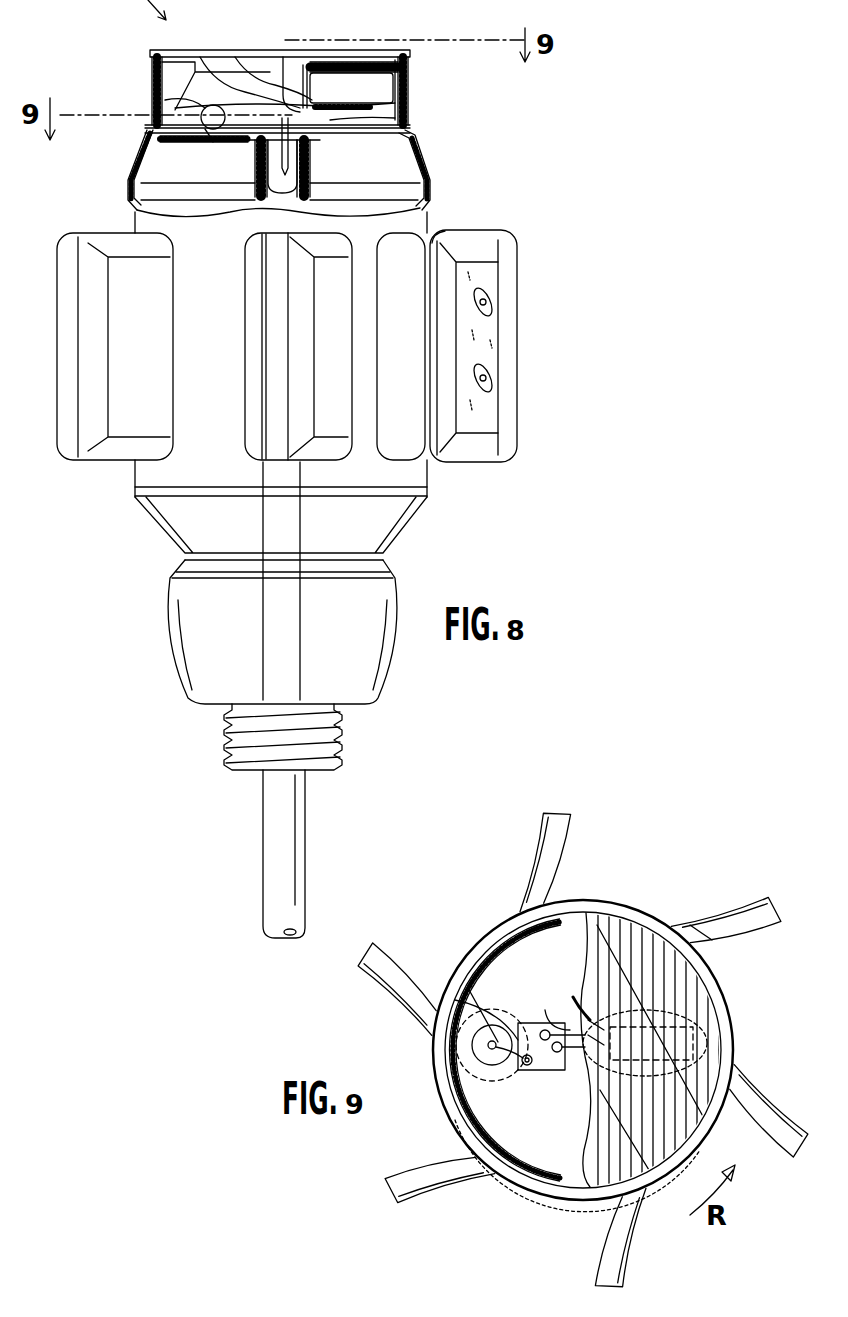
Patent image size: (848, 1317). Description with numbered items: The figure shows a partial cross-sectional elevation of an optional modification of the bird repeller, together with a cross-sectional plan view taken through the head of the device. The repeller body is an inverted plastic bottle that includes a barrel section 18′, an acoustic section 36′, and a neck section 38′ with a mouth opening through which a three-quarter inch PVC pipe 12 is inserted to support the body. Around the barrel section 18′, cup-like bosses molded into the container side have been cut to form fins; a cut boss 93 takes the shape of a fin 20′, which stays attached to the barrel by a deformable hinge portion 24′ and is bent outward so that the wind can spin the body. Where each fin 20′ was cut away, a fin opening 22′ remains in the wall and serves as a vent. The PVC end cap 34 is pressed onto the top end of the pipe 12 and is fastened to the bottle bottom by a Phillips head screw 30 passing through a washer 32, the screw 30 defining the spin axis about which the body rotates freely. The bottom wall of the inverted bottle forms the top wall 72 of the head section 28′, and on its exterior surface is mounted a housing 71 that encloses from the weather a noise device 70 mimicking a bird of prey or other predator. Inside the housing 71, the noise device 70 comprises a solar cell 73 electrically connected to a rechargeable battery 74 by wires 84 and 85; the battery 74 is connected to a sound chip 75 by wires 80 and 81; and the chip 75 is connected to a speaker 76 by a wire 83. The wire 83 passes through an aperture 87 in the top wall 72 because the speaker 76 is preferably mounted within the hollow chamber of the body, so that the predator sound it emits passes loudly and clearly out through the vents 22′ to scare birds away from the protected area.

In FIG. 8, the PVC pipe 12 is at (296, 833).
In FIG. 8, the barrel section 18′ is at (385, 505).
In FIG. 8, the fin 20′ is at (500, 347).
In FIG. 9, the fin 20′ is at (705, 922).
In FIG. 8, the fin opening 22′ is at (418, 460).
In FIG. 8, the hinge portion 24′ is at (435, 243).
In FIG. 8, the head section 28′ is at (432, 172).
In FIG. 8, the Phillips head screw 30 is at (262, 172).
In FIG. 8, the washer 32 is at (300, 143).
In FIG. 8, the PVC end cap 34 is at (310, 178).
In FIG. 8, the acoustic section 36′ is at (375, 633).
In FIG. 8, the neck section 38′ is at (338, 766).
In FIG. 9, the fan assembly 70 is at (456, 910).
In FIG. 8, the housing 71 is at (407, 68).
In FIG. 9, the housing 71 is at (463, 986).
In FIG. 8, the top wall 72 is at (426, 150).
In FIG. 9, the top wall 72 is at (553, 1138).
In FIG. 8, the solar cell 73 is at (158, 50).
In FIG. 9, the solar cell 73 is at (648, 968).
In FIG. 8, the rechargeable battery 74 is at (378, 90).
In FIG. 9, the rechargeable battery 74 is at (700, 1006).
In FIG. 8, the sound chip 75 is at (178, 70).
In FIG. 9, the sound chip 75 is at (545, 1063).
In FIG. 8, the speaker 76 is at (160, 146).
In FIG. 9, the speaker 76 is at (478, 1050).
In FIG. 8, the wire 80 is at (398, 118).
In FIG. 9, the wire 80 is at (568, 1070).
In FIG. 8, the wire 81 is at (283, 57).
In FIG. 9, the wire 81 is at (540, 1023).
In FIG. 8, the wire 83 is at (200, 104).
In FIG. 9, the wire 83 is at (500, 1076).
In FIG. 8, the wire 84 is at (232, 78).
In FIG. 9, the wire 84 is at (546, 1010).
In FIG. 8, the wire 85 is at (262, 80).
In FIG. 9, the wire 85 is at (574, 998).
In FIG. 8, the aperture 87 is at (194, 142).
In FIG. 9, the aperture 87 is at (475, 1066).
In FIG. 8, the boss 93 is at (63, 303).
In FIG. 9, the boss 93 is at (520, 862).